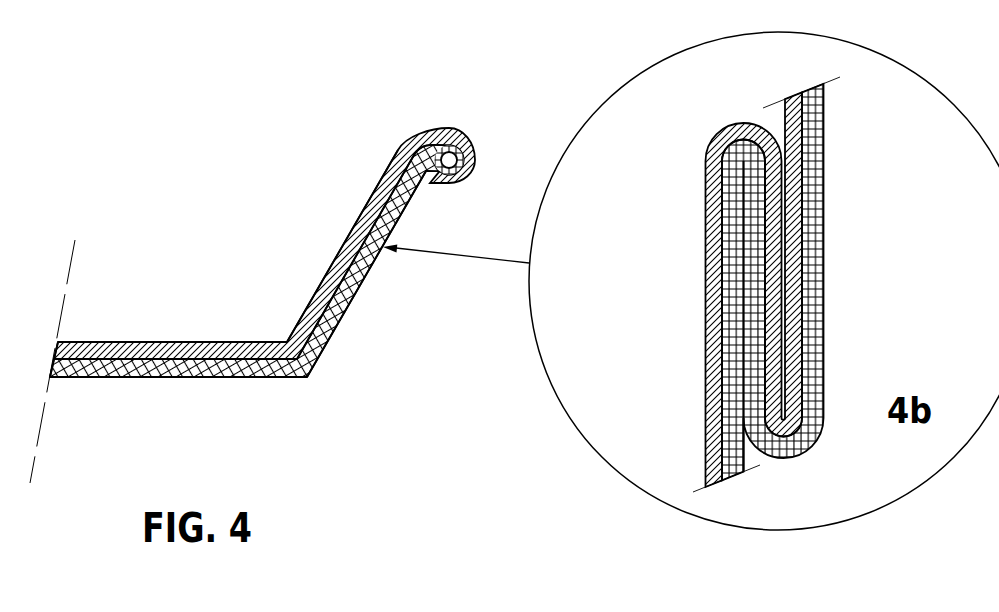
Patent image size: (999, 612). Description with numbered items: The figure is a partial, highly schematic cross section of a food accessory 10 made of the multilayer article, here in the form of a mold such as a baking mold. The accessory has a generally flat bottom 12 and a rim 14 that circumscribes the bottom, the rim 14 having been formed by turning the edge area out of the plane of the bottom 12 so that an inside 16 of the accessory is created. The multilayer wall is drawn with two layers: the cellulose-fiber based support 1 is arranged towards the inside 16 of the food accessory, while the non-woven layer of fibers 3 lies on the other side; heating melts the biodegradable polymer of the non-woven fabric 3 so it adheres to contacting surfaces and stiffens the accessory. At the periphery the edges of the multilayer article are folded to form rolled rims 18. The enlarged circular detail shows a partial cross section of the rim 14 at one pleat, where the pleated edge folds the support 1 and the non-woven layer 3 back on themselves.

The cellulose-fiber based support 1 is at (373, 187).
The non-woven layer of fibers 3 is at (397, 225).
The food accessory 10 is at (265, 211).
The flat bottom 12 is at (162, 362).
The rim 14 is at (368, 263).
The inside 16 is at (210, 293).
The rolled rims 18 is at (465, 137).